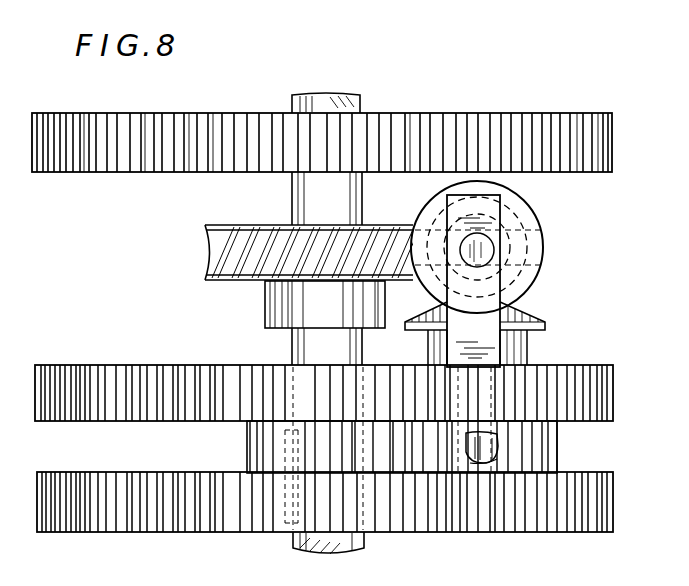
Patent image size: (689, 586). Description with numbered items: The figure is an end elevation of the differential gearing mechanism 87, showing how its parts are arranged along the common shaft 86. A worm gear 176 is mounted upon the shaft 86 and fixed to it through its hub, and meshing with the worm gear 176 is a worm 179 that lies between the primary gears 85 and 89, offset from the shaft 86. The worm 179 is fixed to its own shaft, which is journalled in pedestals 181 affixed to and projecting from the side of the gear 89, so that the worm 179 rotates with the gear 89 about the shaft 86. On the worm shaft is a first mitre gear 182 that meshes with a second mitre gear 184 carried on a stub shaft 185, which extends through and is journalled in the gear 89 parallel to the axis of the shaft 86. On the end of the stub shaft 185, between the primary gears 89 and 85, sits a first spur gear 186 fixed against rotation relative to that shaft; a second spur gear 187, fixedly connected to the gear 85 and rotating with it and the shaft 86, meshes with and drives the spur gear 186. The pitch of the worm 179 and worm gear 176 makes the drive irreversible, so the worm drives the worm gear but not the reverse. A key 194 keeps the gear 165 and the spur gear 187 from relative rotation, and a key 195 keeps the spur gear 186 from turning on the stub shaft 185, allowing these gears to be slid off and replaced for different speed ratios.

The primary gear 85 is at (64, 163).
The shaft 86 is at (366, 88).
The differential gearing mechanism 87 is at (250, 306).
The primary gear 89 is at (100, 375).
The gear 165 is at (158, 518).
The worm gear 176 is at (230, 255).
The worm 179 is at (520, 246).
The pedestals 181 is at (488, 348).
The first mitre gear 182 is at (530, 220).
The second mitre gear 184 is at (540, 318).
The stub shaft 185 is at (468, 240).
The first spur gear 186 is at (552, 451).
The second spur gear 187 is at (250, 450).
The key 194 is at (287, 502).
The key 195 is at (486, 455).